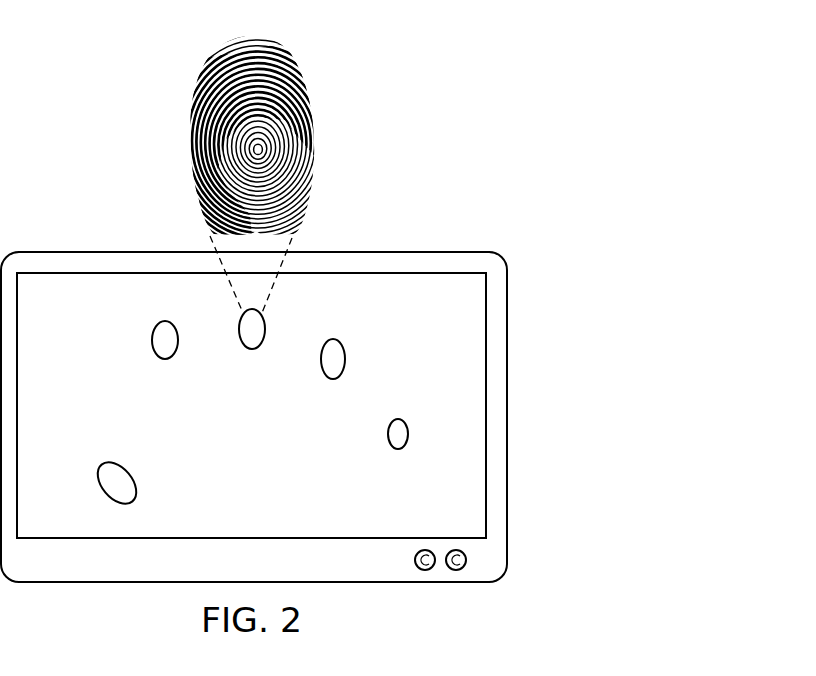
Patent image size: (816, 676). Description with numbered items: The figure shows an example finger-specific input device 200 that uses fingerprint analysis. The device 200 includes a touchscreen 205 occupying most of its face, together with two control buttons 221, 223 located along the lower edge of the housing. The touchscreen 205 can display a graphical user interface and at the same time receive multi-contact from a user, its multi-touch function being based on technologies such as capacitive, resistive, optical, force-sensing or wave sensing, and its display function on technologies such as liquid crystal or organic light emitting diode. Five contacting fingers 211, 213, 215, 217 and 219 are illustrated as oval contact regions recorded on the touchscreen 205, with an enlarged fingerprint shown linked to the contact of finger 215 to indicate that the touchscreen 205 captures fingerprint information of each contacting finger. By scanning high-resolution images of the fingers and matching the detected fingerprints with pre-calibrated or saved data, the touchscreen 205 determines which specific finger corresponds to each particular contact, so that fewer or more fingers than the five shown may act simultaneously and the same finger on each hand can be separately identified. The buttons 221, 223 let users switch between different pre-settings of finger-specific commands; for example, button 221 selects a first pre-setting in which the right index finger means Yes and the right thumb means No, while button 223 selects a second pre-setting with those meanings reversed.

The finger-specific input device 200 is at (88, 217).
The touchscreen 205 is at (270, 487).
The contacting finger 211 is at (104, 493).
The contacting finger 213 is at (165, 359).
The contacting finger 215 is at (251, 349).
The contacting finger 217 is at (334, 379).
The contacting finger 219 is at (398, 449).
The control button 221 is at (422, 571).
The control button 223 is at (457, 571).